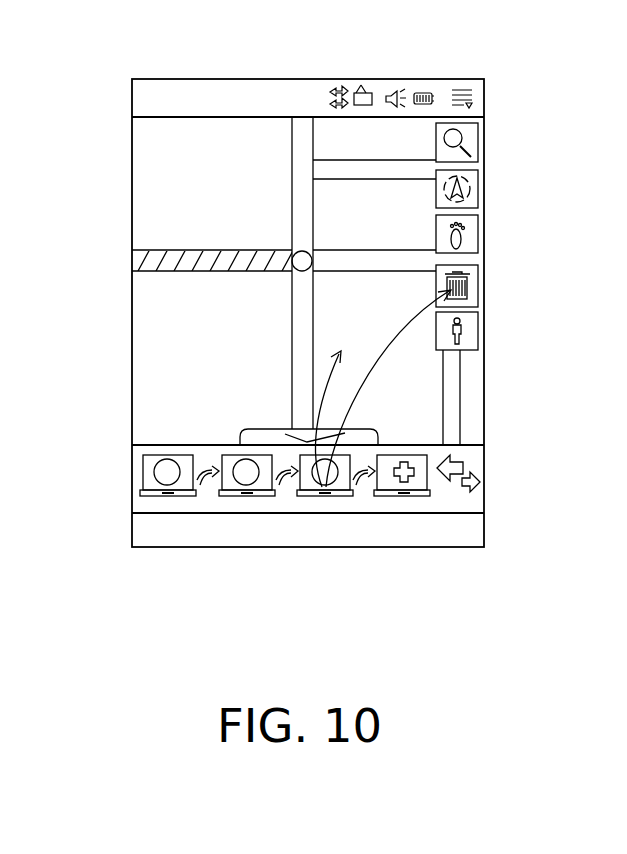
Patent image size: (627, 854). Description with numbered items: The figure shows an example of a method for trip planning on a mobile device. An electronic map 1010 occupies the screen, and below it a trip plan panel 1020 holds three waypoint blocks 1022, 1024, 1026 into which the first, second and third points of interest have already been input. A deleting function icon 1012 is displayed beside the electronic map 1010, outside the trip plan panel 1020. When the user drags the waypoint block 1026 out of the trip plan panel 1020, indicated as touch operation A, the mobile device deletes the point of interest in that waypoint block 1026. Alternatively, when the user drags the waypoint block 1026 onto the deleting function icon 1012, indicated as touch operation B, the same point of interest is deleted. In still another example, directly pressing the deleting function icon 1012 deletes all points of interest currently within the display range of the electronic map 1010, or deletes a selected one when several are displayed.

The electronic map 1010 is at (132, 170).
The deleting function icon 1012 is at (478, 283).
The trip plan panel 1020 is at (132, 478).
The waypoint block 1022 is at (166, 478).
The waypoint block 1024 is at (246, 480).
The waypoint block 1026 is at (322, 487).